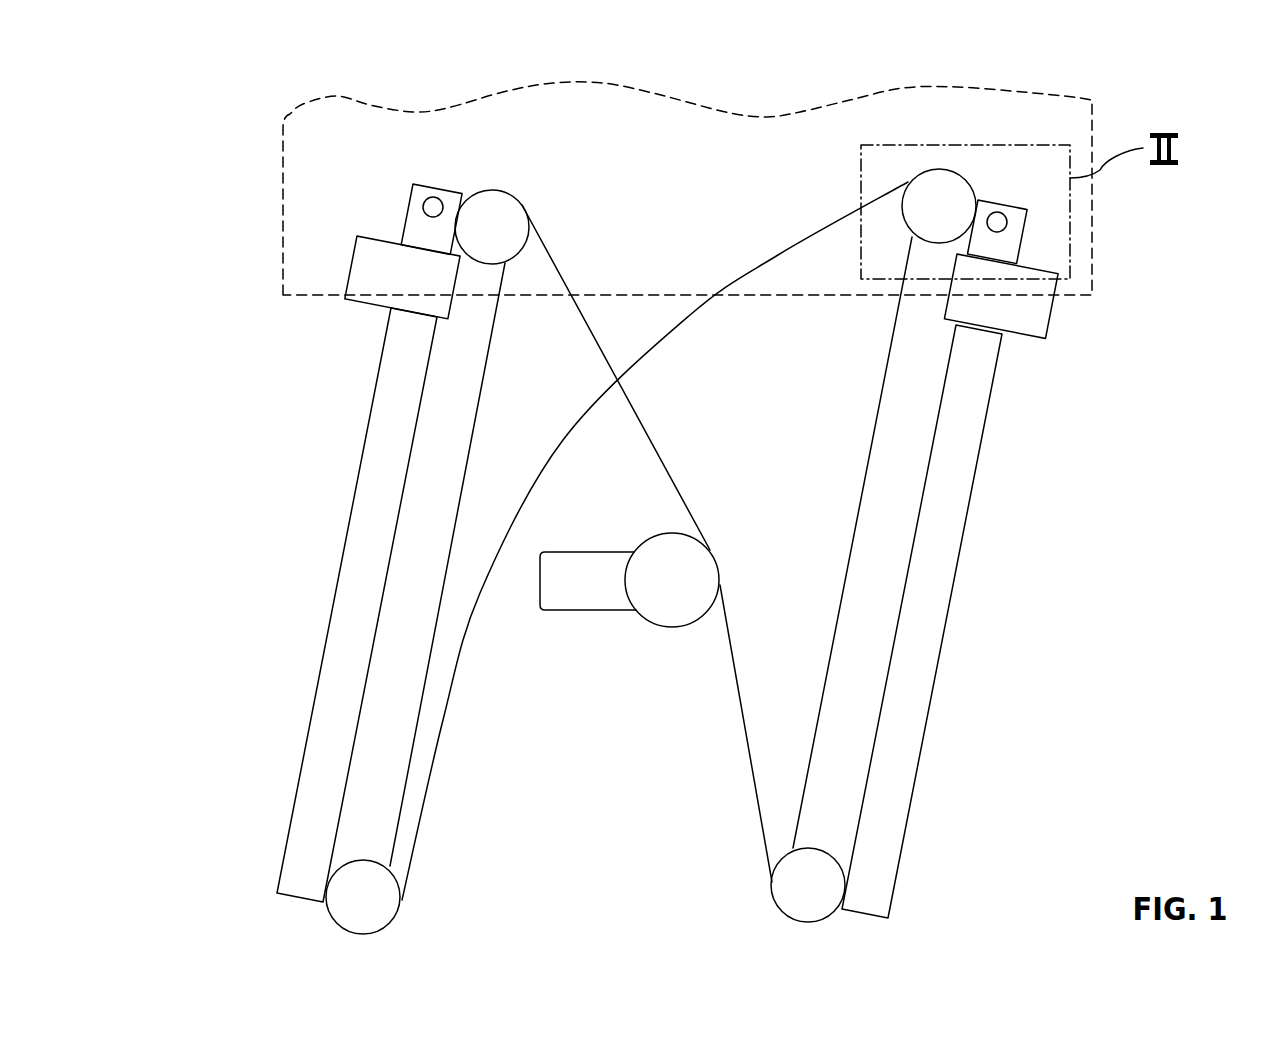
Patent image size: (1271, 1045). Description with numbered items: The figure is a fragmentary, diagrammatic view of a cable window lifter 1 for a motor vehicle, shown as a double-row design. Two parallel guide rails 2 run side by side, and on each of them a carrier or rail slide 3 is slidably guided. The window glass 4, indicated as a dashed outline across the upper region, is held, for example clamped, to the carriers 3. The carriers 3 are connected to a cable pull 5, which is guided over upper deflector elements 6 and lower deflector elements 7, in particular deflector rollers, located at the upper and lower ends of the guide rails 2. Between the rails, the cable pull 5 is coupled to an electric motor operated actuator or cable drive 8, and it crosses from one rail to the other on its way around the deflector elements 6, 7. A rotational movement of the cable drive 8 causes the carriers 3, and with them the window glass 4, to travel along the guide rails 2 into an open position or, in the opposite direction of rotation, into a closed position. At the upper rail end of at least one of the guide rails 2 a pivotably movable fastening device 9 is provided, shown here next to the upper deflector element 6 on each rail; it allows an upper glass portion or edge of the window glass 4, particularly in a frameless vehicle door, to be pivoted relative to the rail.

The window lifter 1 is at (216, 380).
The guide rail 2 is at (345, 537).
The carrier 3 is at (370, 296).
The window glass 4 is at (785, 137).
The cable pull 5 is at (778, 257).
The upper deflector element 6 is at (488, 210).
The lower deflector element 7 is at (377, 903).
The cable drive 8 is at (578, 612).
The fastening device 9 is at (436, 196).